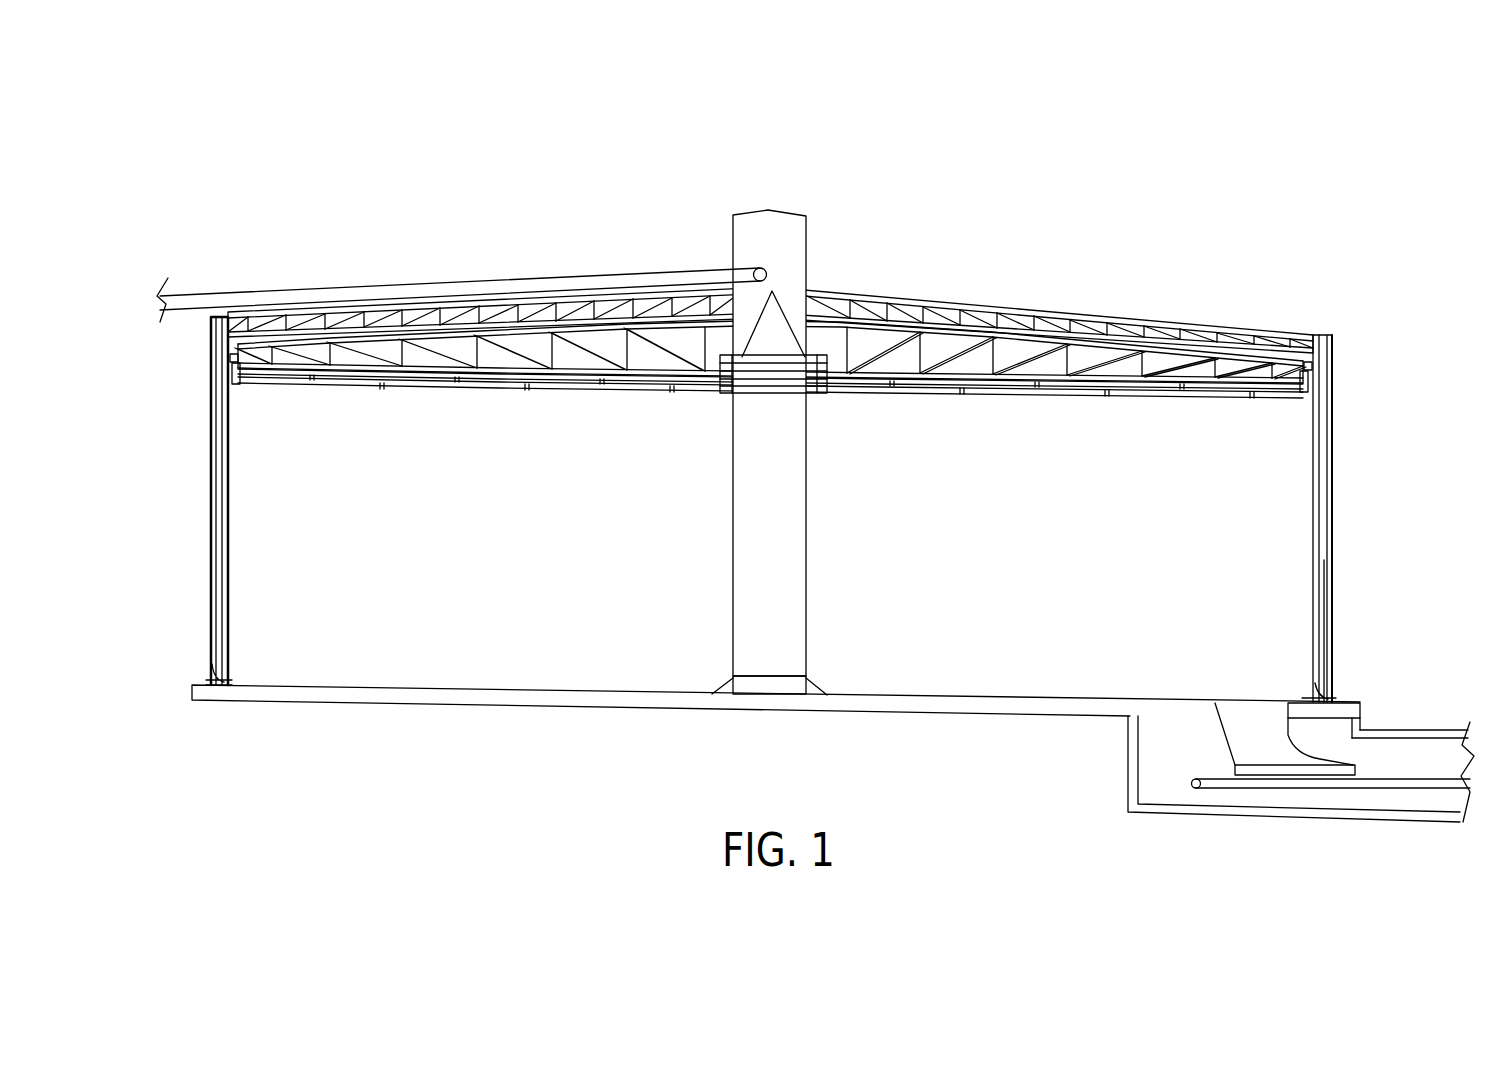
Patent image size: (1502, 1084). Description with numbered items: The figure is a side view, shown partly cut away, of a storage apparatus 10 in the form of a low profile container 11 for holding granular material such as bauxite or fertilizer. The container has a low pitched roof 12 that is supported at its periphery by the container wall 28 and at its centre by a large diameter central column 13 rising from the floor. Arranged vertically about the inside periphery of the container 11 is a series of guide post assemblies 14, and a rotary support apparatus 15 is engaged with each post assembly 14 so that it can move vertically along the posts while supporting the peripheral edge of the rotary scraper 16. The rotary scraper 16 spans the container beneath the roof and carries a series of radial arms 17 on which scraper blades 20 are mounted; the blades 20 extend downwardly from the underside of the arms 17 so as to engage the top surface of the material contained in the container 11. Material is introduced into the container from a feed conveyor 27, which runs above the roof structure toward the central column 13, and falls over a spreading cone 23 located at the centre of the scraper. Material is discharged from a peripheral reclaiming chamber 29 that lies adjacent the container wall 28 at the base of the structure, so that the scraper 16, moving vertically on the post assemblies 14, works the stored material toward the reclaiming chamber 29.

The storage apparatus 10 is at (1300, 288).
The low profile container 11 is at (1332, 526).
The low pitched roof 12 is at (1125, 318).
The central column 13 is at (806, 572).
The guide post assemblies 14 is at (228, 556).
The rotary support apparatus 15 is at (238, 394).
The rotary scraper 16 is at (490, 401).
The radial arms 17 is at (632, 353).
The scraper blades 20 is at (297, 382).
The spreading cone 23 is at (777, 298).
The feed conveyor 27 is at (440, 282).
The container wall 28 is at (1328, 624).
The peripheral reclaiming chamber 29 is at (1330, 734).